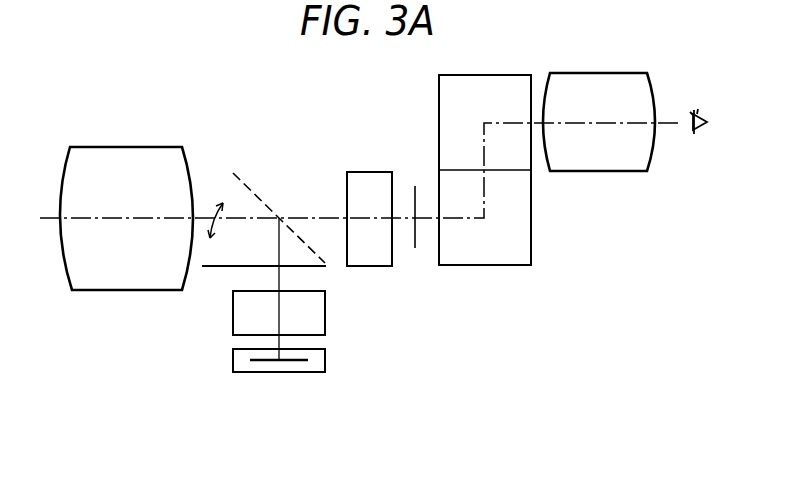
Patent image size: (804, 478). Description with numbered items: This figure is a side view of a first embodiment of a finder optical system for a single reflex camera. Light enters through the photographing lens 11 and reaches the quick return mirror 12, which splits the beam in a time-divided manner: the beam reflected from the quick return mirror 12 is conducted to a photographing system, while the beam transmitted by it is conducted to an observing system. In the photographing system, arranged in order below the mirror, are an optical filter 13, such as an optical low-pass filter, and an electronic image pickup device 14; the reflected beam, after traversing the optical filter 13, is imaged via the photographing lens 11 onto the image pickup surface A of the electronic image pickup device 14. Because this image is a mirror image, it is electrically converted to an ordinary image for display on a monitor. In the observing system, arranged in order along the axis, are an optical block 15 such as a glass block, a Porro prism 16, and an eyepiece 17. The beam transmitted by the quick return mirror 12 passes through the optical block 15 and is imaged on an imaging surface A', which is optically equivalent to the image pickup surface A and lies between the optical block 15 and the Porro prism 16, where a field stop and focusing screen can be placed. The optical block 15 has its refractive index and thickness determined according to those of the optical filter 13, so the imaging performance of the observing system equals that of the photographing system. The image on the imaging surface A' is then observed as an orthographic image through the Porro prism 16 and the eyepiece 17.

The photographing lens 11 is at (150, 147).
The quick return mirror 12 is at (209, 268).
The optical filter 13 is at (233, 328).
The electronic image pickup device 14 is at (317, 374).
The image pickup surface A is at (302, 344).
The optical block 15 is at (371, 267).
The imaging surface A' is at (427, 247).
The Porro prism 16 is at (500, 267).
The eyepiece 17 is at (586, 73).